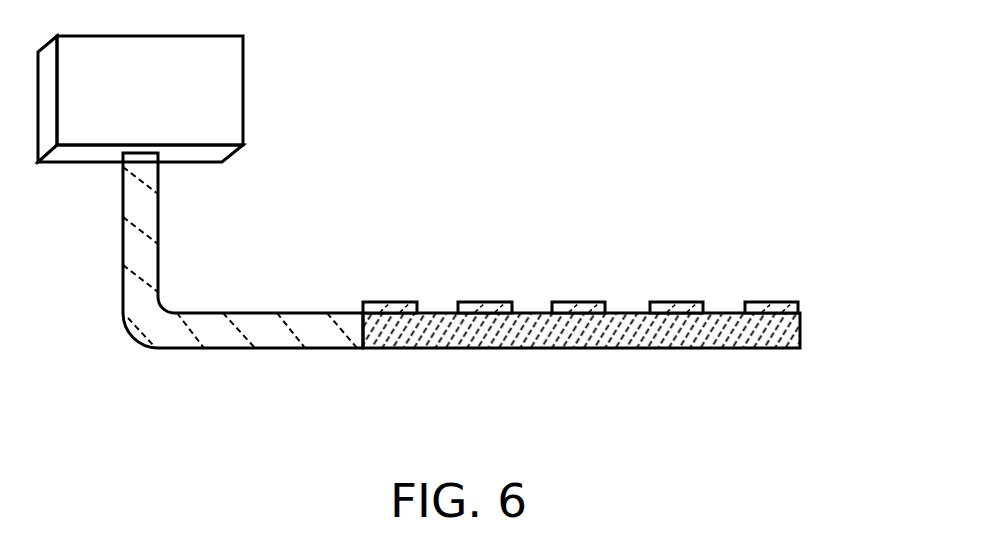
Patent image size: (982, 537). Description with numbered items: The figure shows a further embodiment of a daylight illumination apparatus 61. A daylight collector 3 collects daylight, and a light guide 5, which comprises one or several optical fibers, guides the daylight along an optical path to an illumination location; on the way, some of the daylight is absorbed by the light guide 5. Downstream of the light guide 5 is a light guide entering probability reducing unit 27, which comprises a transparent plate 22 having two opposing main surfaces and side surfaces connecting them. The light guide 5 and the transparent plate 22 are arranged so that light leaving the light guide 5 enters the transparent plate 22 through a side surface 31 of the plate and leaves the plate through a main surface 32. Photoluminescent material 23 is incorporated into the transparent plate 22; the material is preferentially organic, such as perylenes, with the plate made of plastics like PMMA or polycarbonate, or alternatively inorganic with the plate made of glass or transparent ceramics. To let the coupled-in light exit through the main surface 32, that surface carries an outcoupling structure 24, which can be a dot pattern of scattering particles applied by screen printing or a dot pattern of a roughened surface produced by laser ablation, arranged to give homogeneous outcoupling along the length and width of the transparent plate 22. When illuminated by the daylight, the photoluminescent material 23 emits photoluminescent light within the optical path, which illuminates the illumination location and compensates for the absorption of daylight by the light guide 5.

The daylight collector 3 is at (243, 94).
The light guide 5 is at (275, 313).
The transparent plate 22 is at (800, 330).
The photoluminescent material 23 is at (732, 323).
The outcoupling structure 24 is at (590, 302).
The light guide entering probability reducing unit 27 is at (680, 358).
The side surface 31 is at (363, 323).
The main surface 32 is at (537, 308).
The daylight illumination apparatus 61 is at (302, 185).